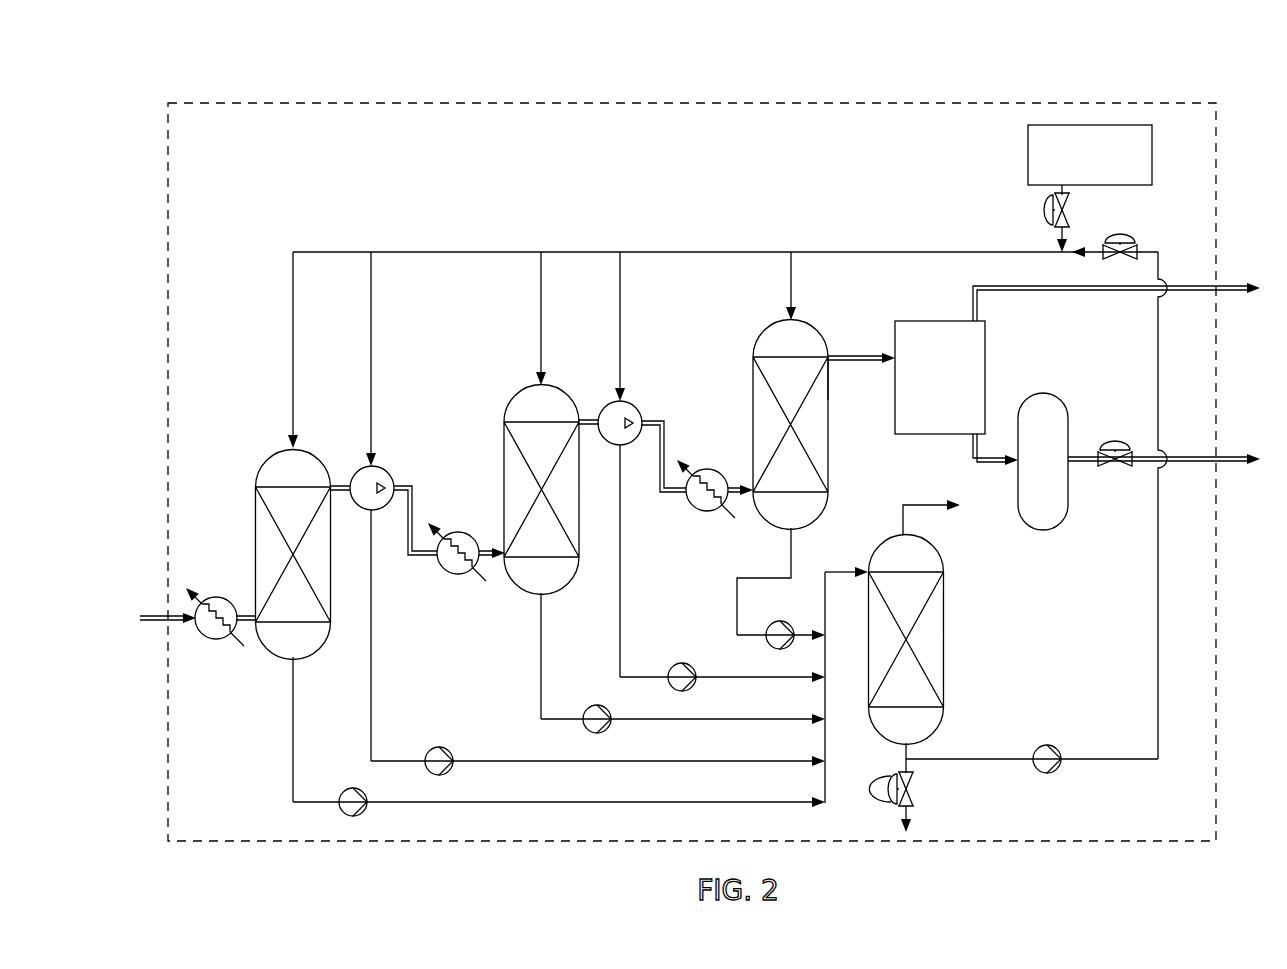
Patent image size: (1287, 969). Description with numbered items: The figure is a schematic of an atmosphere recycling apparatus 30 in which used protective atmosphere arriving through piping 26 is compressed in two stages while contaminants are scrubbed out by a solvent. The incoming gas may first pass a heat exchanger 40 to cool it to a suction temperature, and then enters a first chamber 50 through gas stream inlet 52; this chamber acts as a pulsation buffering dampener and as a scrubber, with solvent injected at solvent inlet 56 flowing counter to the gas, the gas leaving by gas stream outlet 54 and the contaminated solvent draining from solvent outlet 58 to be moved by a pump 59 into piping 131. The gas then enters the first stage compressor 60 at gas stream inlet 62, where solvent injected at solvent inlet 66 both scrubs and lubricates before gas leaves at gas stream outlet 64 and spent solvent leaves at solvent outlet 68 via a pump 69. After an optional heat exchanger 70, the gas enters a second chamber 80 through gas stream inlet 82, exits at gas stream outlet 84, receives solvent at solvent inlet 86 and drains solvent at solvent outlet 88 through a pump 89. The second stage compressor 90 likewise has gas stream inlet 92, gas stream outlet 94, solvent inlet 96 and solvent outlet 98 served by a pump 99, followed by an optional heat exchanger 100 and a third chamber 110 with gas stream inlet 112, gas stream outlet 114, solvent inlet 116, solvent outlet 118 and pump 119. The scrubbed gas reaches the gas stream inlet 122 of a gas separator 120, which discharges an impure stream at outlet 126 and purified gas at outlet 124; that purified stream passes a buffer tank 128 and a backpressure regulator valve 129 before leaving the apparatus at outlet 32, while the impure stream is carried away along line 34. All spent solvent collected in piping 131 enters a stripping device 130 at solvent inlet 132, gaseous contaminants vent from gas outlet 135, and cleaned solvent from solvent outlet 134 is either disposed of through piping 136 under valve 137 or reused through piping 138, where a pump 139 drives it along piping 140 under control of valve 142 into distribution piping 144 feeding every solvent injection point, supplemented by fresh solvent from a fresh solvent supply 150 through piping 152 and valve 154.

The recycling apparatus 30 is at (365, 103).
The piping 26 is at (152, 624).
The heat exchanger 40 is at (217, 640).
The first chamber 50 is at (257, 500).
The gas stream inlet 52 is at (254, 612).
The gas stream outlet 54 is at (336, 484).
The solvent inlet 56 is at (290, 446).
The solvent outlet 58 is at (291, 690).
The pump 59 is at (345, 790).
The first stage compressor 60 is at (390, 470).
The gas stream inlet 62 is at (362, 468).
The gas stream outlet 64 is at (410, 486).
The solvent inlet 66 is at (382, 467).
The solvent outlet 68 is at (370, 512).
The pump 69 is at (433, 748).
The heat exchanger 70 is at (455, 575).
The second chamber 80 is at (504, 440).
The gas stream inlet 82 is at (498, 548).
The gas stream outlet 84 is at (584, 418).
The solvent inlet 86 is at (538, 382).
The solvent outlet 88 is at (540, 600).
The pump 89 is at (592, 706).
The second stage compressor 90 is at (636, 404).
The gas stream inlet 92 is at (600, 420).
The gas stream outlet 94 is at (646, 420).
The solvent inlet 96 is at (621, 392).
The solvent outlet 98 is at (619, 448).
The pump 99 is at (676, 665).
The heat exchanger 100 is at (700, 512).
The third chamber 110 is at (752, 345).
The gas stream inlet 112 is at (746, 484).
The gas stream outlet 114 is at (830, 350).
The solvent inlet 116 is at (788, 310).
The solvent outlet 118 is at (790, 538).
The pump 119 is at (780, 620).
The gas separator 120 is at (940, 377).
The gas stream inlet 122 is at (893, 366).
The outlet 124 is at (972, 438).
The outlet 126 is at (972, 318).
The buffer tank 128 is at (1043, 461).
The backpressure regulator valve 129 is at (1115, 450).
The stripping device 130 is at (945, 590).
The piping 131 is at (824, 740).
The solvent inlet 132 is at (862, 568).
The solvent outlet 134 is at (904, 746).
The gas outlet 135 is at (903, 525).
The piping 136 is at (912, 768).
The valve 137 is at (890, 792).
The piping 138 is at (918, 758).
The pump 139 is at (1042, 747).
The piping 140 is at (1158, 250).
The valve 142 is at (1120, 238).
The piping 144 is at (942, 250).
The fresh solvent supply 150 is at (1090, 155).
The piping 152 is at (1060, 191).
The valve 154 is at (1045, 210).
The product outlet stream 34 is at (1242, 286).
The outlet 32 is at (1238, 465).